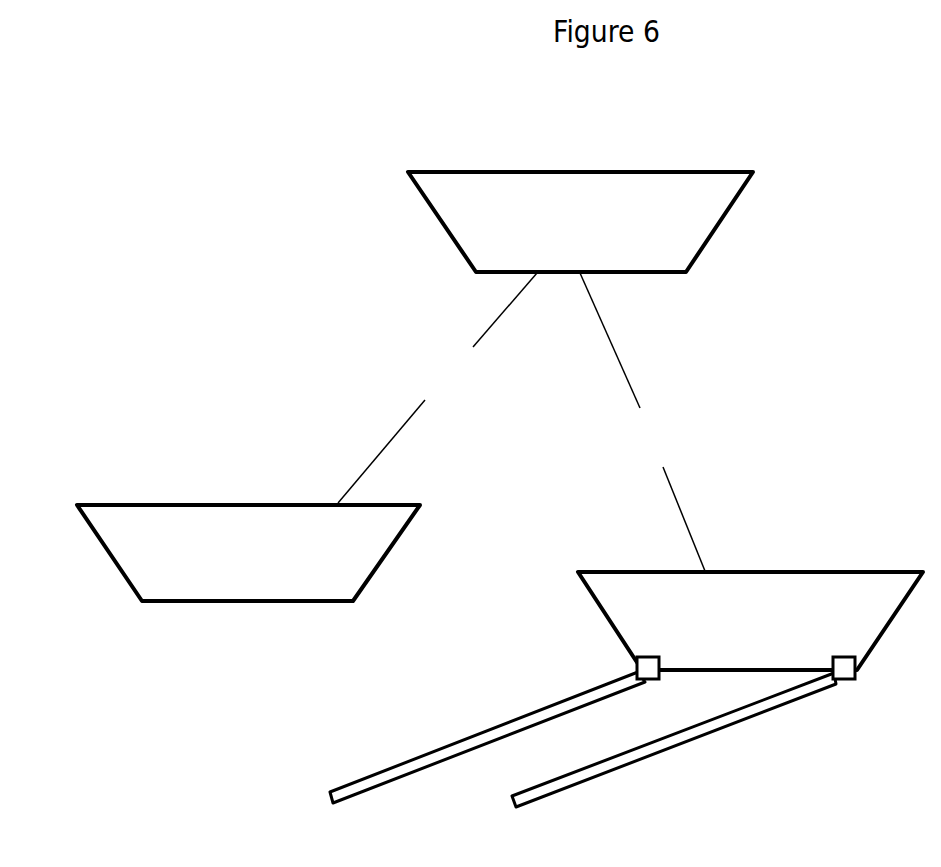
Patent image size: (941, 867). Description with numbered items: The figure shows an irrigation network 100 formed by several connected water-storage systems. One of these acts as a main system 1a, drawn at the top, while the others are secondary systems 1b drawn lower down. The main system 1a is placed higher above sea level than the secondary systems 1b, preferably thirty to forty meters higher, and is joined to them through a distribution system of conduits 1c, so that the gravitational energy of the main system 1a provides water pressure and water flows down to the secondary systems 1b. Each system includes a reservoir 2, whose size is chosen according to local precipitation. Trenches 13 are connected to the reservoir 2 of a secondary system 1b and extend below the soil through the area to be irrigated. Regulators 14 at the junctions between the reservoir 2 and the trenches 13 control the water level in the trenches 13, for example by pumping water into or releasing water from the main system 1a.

The irrigation network 100 is at (378, 87).
The main system 1a is at (579, 170).
The reservoir 2 is at (590, 229).
The secondary system 1b is at (248, 503).
The conduit 1c is at (521, 422).
The trench 13 is at (375, 765).
The regulator 14 is at (651, 656).